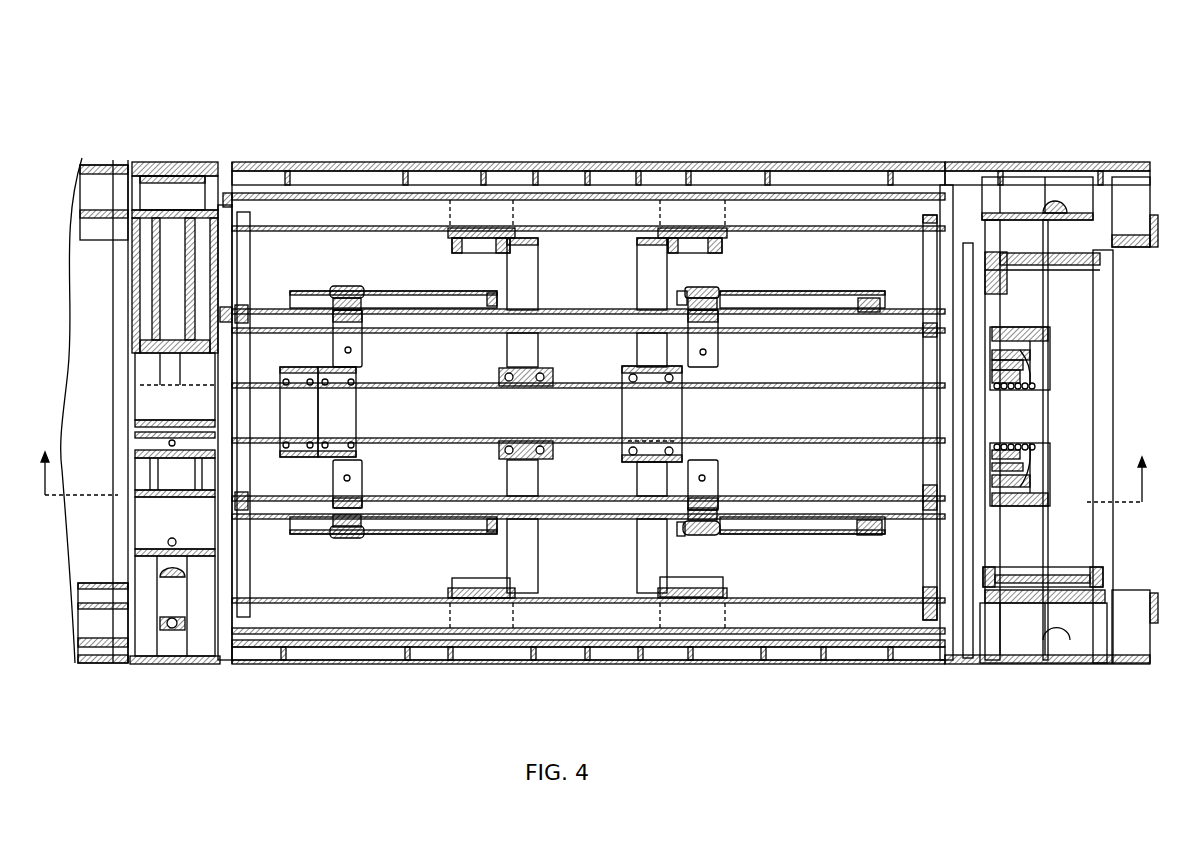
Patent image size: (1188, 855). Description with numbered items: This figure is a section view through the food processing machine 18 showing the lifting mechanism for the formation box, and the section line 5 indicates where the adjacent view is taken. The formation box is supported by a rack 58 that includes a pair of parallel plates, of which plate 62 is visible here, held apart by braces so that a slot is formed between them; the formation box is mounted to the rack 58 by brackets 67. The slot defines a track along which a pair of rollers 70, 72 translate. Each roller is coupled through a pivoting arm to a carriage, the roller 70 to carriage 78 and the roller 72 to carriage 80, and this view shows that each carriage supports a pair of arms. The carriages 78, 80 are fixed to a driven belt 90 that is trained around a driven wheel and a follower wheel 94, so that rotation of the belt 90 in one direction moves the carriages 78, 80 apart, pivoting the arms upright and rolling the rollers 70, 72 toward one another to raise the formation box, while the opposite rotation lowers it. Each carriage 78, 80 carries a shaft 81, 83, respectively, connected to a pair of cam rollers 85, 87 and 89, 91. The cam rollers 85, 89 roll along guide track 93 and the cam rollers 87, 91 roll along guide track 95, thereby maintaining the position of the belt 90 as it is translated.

The conveyor assembly 18 is at (838, 50).
The section line 5- 5 is at (592, 459).
The rack 58 is at (878, 578).
The plate 62 is at (584, 310).
The brackets 67 is at (360, 338).
The roller 70 is at (357, 287).
The roller 72 is at (704, 288).
The carriage 78 is at (492, 448).
The carriage 80 is at (680, 406).
The shaft 81 is at (538, 480).
The shaft 83 is at (643, 473).
The cam roller 85 is at (693, 647).
The cam roller 87 is at (725, 160).
The cam roller 89 is at (462, 618).
The driven belt 90 is at (848, 421).
The cam roller 91 is at (510, 160).
The guide track 93 is at (815, 613).
The follower wheel 94 is at (1040, 383).
The guide track 95 is at (815, 160).